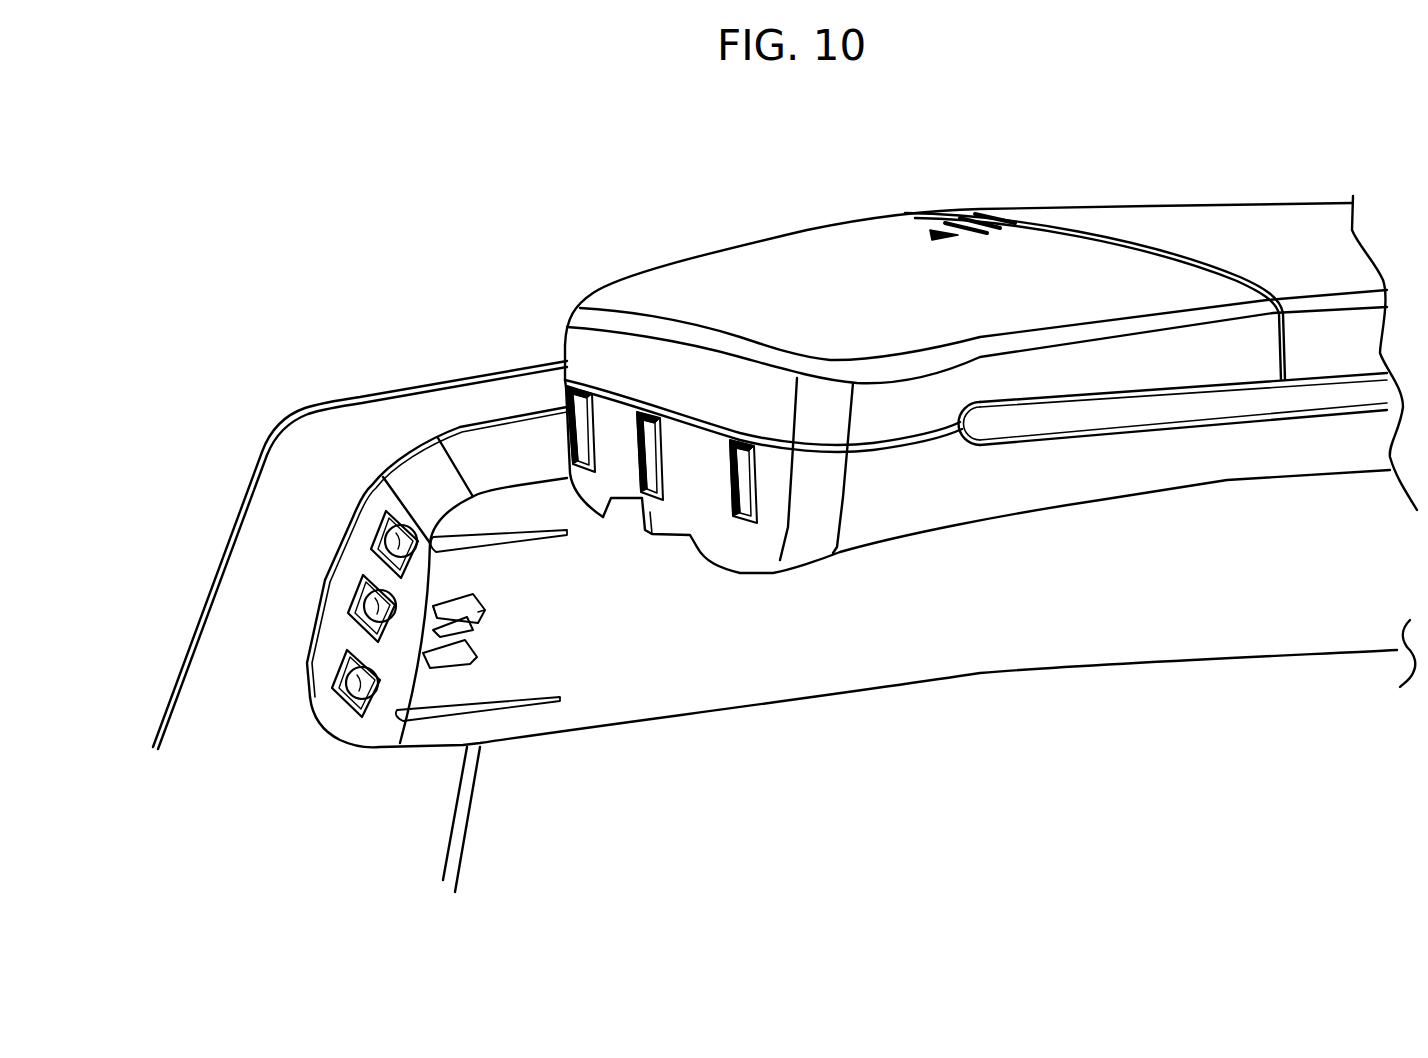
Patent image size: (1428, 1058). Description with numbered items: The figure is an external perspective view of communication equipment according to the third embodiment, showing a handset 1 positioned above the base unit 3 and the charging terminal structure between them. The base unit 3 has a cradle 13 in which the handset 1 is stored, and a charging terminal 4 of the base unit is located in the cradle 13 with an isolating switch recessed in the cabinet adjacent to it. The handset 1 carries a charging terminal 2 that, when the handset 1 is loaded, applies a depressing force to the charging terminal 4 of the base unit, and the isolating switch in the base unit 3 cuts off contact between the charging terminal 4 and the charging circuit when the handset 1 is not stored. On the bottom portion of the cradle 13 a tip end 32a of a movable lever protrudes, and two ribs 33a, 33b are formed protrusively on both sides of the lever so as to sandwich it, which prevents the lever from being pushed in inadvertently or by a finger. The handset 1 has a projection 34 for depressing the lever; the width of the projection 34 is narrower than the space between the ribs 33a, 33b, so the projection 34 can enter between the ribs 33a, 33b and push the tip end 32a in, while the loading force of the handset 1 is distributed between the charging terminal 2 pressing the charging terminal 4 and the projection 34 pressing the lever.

The handset 1 is at (815, 224).
The charging terminal of the handset 2 is at (735, 443).
The base unit 3 is at (293, 417).
The charging terminal of the base unit 4 is at (347, 655).
The cradle 13 is at (740, 690).
The tip end of the lever 32a is at (474, 628).
The rib 33a is at (486, 603).
The rib 33b is at (453, 657).
The projection 34 is at (663, 527).